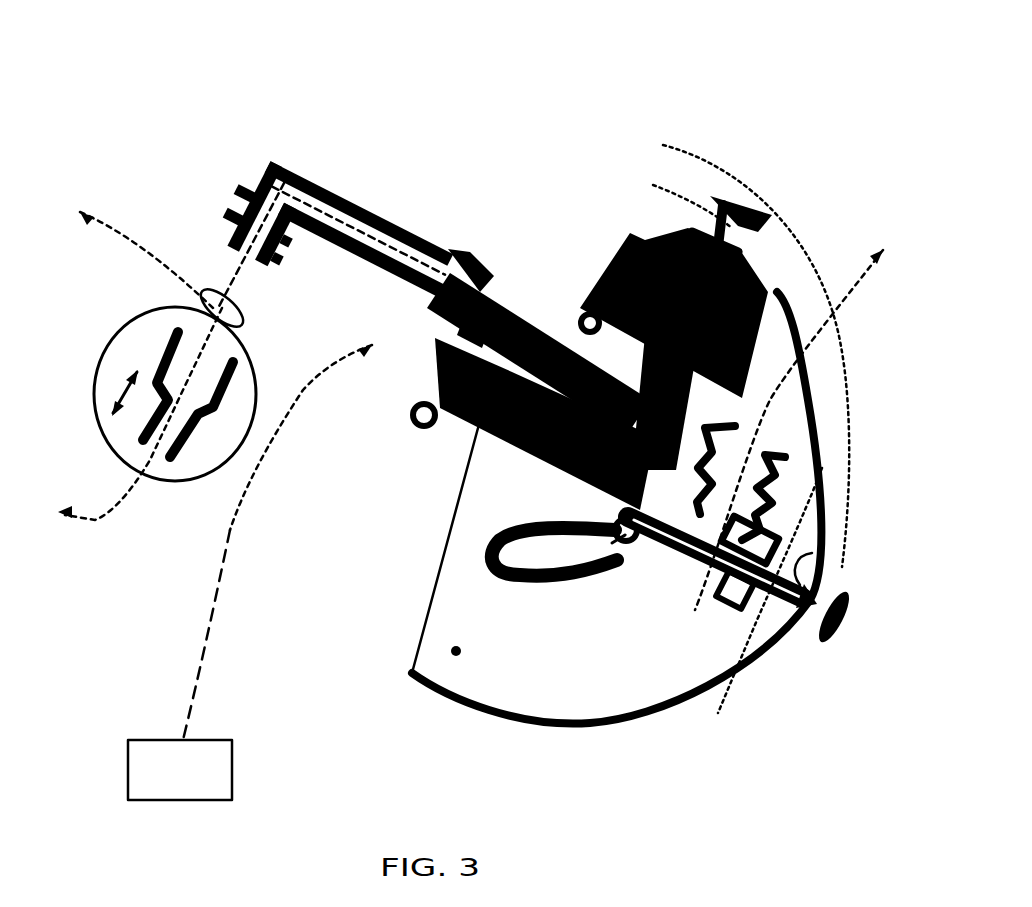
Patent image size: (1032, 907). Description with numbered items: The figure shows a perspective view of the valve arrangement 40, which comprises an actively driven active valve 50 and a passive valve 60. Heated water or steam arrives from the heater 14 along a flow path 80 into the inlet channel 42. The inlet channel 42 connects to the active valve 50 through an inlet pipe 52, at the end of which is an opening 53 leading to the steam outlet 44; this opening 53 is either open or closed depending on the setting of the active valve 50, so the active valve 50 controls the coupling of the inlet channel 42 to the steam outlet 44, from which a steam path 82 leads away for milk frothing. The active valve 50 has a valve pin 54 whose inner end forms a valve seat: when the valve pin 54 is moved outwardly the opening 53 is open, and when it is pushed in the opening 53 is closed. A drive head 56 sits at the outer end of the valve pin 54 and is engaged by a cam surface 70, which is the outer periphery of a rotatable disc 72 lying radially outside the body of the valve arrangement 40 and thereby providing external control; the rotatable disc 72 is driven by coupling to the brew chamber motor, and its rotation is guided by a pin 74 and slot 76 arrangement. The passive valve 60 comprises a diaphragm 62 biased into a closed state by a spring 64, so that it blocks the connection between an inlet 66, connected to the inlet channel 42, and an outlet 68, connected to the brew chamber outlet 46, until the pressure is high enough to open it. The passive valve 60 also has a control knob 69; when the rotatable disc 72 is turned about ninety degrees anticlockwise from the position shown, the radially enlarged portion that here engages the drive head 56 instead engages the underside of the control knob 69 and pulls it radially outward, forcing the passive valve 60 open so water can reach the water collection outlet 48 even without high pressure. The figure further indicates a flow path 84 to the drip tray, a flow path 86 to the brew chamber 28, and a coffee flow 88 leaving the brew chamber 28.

The heater 14 is at (130, 748).
The brew chamber 28 is at (97, 376).
The valve arrangement 40 is at (385, 112).
The inlet channel 42 is at (424, 428).
The steam outlet 44 is at (787, 467).
The brew chamber outlet 46 is at (247, 200).
The water collection outlet 48 is at (208, 296).
The active valve 50 is at (707, 600).
The inlet pipe 52 is at (513, 453).
The opening 53 is at (648, 540).
The valve pin 54 is at (812, 553).
The drive head 56 is at (800, 613).
The passive valve 60 is at (606, 245).
The diaphragm 62 is at (720, 340).
The spring 64 is at (693, 240).
The inlet 66 is at (700, 407).
The outlet 68 is at (524, 308).
The control knob 69 is at (737, 205).
The cam surface 70 is at (550, 730).
The rotatable disc 72 is at (450, 649).
The pin 74 is at (613, 543).
The slot 76 is at (513, 580).
The flow path 80 is at (282, 423).
The steam path 82 is at (857, 300).
The flow path 84 is at (145, 244).
The flow path 86 is at (207, 348).
The coffee flow 88 is at (117, 517).